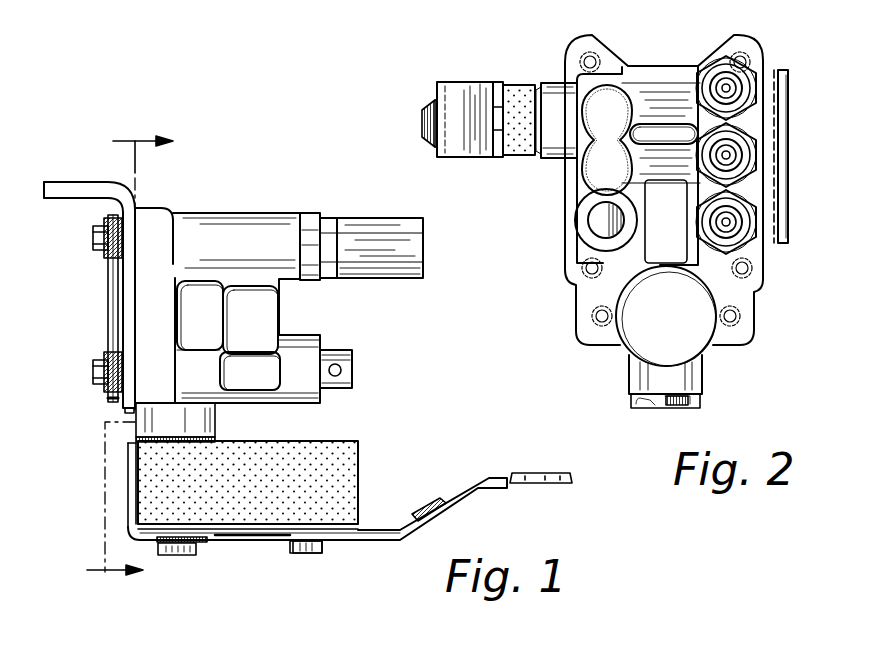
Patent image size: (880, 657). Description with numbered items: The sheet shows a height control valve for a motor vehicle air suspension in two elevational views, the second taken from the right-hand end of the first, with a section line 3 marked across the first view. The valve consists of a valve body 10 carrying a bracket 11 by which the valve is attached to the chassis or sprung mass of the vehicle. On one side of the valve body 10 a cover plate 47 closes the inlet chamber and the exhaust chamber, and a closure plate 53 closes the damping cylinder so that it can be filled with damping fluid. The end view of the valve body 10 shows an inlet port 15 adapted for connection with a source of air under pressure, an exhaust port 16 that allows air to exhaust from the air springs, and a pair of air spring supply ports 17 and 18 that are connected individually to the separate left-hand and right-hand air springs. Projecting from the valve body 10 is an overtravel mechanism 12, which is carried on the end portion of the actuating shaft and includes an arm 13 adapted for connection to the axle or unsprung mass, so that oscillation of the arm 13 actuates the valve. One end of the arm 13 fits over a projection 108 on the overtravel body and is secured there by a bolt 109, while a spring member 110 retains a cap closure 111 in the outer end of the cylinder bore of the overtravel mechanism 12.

In FIG. 1, the section line 3- 3 is at (115, 358).
In FIG. 1, the valve body 10 is at (227, 212).
In FIG. 2, the valve body 10 is at (567, 190).
In FIG. 1, the bracket 11 is at (50, 182).
In FIG. 2, the bracket 11 is at (787, 78).
In FIG. 1, the overtravel mechanism 12 is at (360, 441).
In FIG. 2, the overtravel mechanism 12 is at (520, 83).
In FIG. 1, the arm 13 is at (453, 497).
In FIG. 2, the arm 13 is at (500, 83).
In FIG. 2, the inlet port 15 is at (733, 223).
In FIG. 1, the exhaust port 16 is at (355, 367).
In FIG. 2, the exhaust port 16 is at (603, 222).
In FIG. 2, the air spring supply port 17 is at (723, 88).
In FIG. 2, the air spring supply port 18 is at (737, 153).
In FIG. 1, the cover plate 47 is at (130, 316).
In FIG. 1, the closure plate 53 is at (113, 277).
In FIG. 1, the projection 108 is at (183, 556).
In FIG. 2, the projection 108 is at (420, 114).
In FIG. 1, the bolt 109 is at (303, 556).
In FIG. 1, the spring member 110 is at (127, 528).
In FIG. 2, the spring member 110 is at (432, 90).
In FIG. 1, the cap closure 111 is at (137, 465).